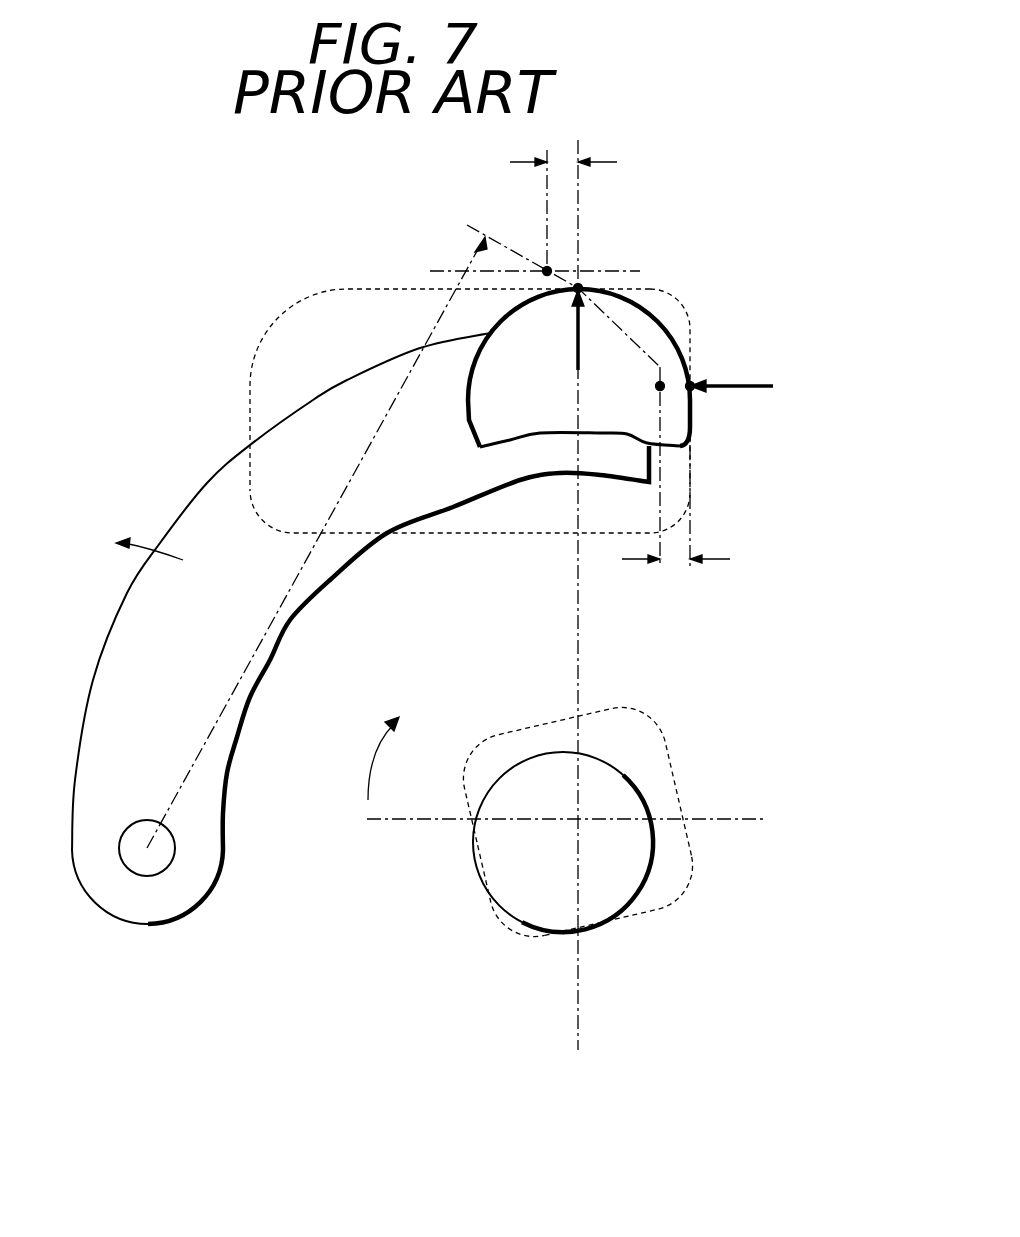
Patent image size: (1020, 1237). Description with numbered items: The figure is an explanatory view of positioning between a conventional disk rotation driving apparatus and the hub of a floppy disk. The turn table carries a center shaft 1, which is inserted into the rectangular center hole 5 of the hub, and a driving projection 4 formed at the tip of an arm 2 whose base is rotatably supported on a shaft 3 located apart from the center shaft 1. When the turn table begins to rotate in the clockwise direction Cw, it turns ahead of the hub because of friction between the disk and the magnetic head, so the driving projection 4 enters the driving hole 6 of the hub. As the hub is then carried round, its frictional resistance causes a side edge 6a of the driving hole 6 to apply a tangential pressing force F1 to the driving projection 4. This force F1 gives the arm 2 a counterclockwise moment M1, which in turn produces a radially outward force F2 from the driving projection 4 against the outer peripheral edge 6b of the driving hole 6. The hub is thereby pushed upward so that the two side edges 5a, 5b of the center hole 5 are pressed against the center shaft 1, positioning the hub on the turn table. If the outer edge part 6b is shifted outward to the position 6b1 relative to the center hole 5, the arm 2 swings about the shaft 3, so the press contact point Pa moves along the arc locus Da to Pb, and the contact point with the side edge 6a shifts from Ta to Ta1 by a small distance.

The center shaft 1 is at (492, 842).
The arm 2 is at (270, 662).
The shaft 3 is at (148, 876).
The driving projection 4 is at (652, 322).
The center hole 5 is at (682, 760).
The side edge of center hole 5a is at (480, 907).
The side edge of center hole 5b is at (630, 915).
The driving hole 6 is at (483, 535).
The side edge of driving hole 6a is at (690, 450).
The outer peripheral edge of driving hole 6b is at (386, 289).
The shifted position of outer edge part 6b1 is at (445, 268).
The moment M1 is at (134, 544).
The clockwise direction Cw is at (400, 746).
The arc locus Da is at (562, 280).
The press contact point Pa is at (578, 288).
The press contact point Pb is at (547, 271).
The contact point Ta is at (690, 386).
The contact point Ta1 is at (660, 386).
The pressing force F1 is at (749, 390).
The force F2 is at (565, 330).